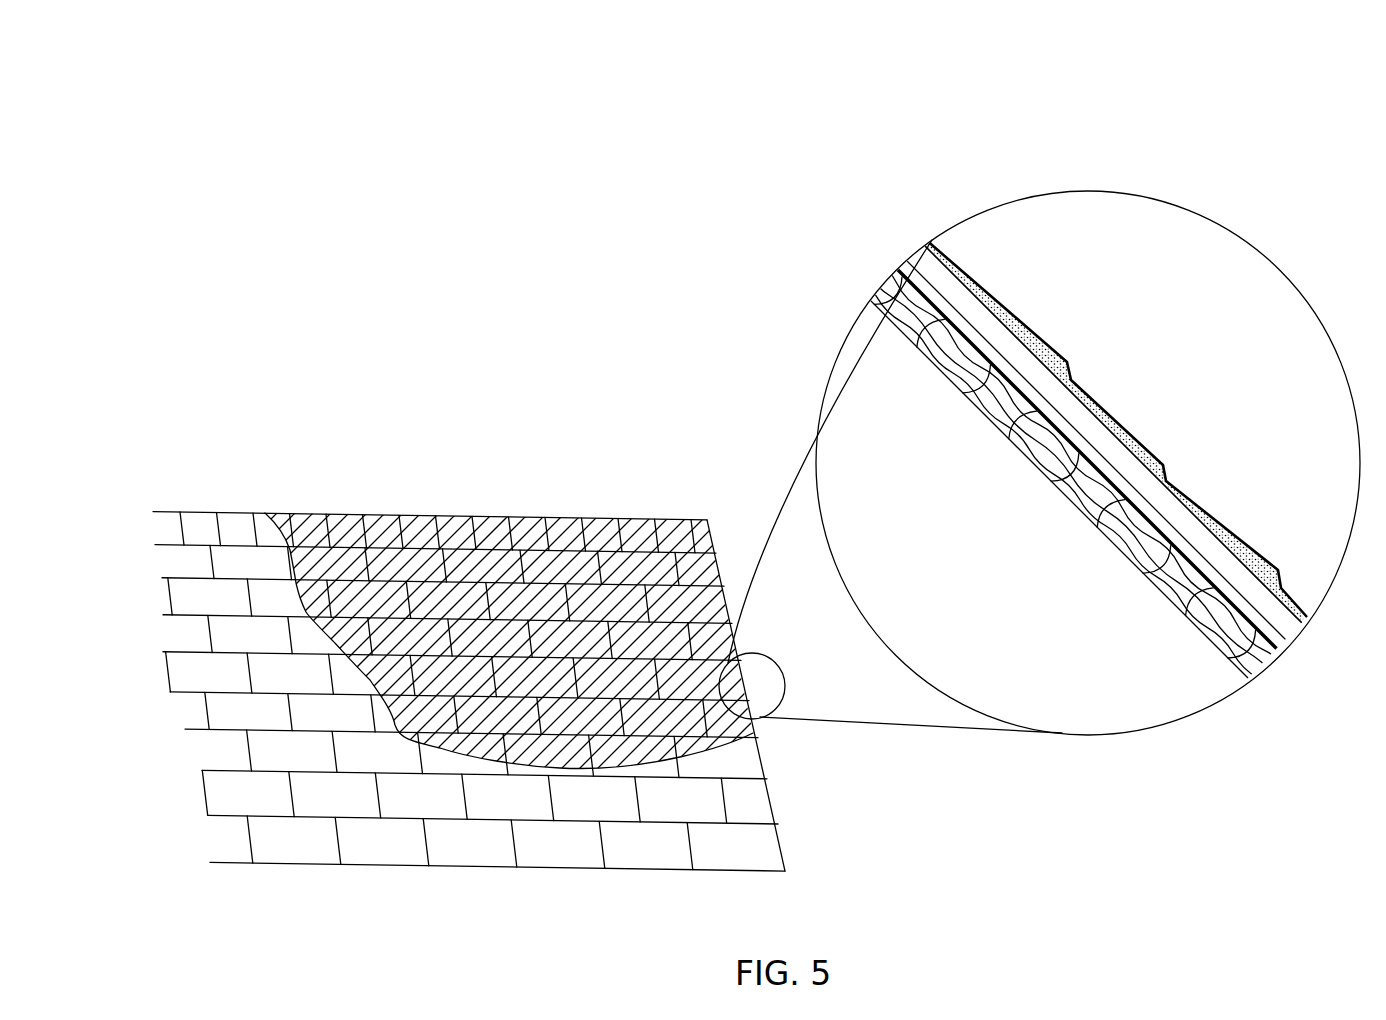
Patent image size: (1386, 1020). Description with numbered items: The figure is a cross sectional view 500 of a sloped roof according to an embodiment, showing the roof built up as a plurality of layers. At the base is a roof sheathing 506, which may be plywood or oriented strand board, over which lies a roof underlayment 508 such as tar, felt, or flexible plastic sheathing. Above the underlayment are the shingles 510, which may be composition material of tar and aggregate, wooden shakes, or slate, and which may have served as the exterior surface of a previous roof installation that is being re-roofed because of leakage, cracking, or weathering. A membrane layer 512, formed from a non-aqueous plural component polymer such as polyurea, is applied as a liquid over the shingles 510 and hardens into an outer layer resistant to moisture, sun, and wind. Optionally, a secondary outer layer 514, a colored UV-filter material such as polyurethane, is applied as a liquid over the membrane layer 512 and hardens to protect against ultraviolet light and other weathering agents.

The cross sectional view 500 is at (634, 473).
The roof sheathing 506 is at (1015, 425).
The roof underlayment 508 is at (1092, 473).
The shingles 510 is at (403, 797).
The membrane layer 512 is at (515, 600).
The secondary outer layer 514 is at (1137, 447).